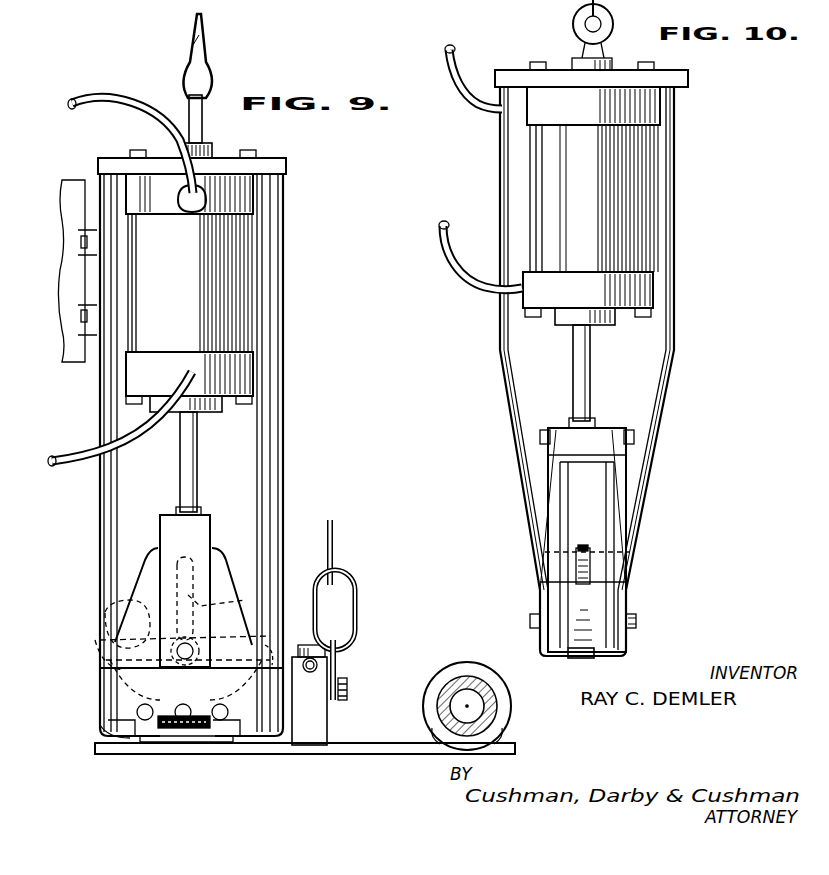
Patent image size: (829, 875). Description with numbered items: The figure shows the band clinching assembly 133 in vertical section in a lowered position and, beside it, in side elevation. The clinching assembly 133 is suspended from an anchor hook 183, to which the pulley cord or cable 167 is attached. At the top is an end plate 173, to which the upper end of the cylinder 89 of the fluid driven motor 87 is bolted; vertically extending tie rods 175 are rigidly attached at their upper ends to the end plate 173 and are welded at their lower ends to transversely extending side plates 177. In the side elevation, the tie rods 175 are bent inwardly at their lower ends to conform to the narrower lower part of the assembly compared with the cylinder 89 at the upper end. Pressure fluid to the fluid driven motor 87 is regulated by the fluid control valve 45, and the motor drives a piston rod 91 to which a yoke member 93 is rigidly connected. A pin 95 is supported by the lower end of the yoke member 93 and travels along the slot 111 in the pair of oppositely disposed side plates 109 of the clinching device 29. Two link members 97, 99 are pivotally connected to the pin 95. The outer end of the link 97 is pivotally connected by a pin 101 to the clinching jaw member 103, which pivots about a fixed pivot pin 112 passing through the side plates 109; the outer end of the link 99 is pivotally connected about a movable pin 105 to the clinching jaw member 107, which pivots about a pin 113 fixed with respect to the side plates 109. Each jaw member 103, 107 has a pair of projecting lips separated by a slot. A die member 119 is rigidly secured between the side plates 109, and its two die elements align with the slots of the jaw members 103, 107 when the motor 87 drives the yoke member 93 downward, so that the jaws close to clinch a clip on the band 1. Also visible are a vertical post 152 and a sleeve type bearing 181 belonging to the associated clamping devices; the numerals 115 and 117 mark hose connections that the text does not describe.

In FIG. 9, the band member 1 is at (183, 743).
In FIG. 9, the clip sealing or clinching device 29 is at (92, 630).
In FIG. 9, the fluid control valve 45 is at (62, 260).
In FIG. 9, the fluid driven motor 87 is at (291, 323).
In FIG. 10, the cylinder 89 is at (625, 215).
In FIG. 9, the piston rod 91 is at (200, 470).
In FIG. 10, the piston rod 91 is at (592, 392).
In FIG. 9, the yoke member 93 is at (212, 528).
In FIG. 10, the yoke member 93 is at (606, 430).
In FIG. 9, the pin 95 is at (200, 652).
In FIG. 9, the link member 97 is at (240, 632).
In FIG. 9, the link member 99 is at (105, 612).
In FIG. 9, the pin 101 is at (215, 658).
In FIG. 9, the clinching jaw member 103 is at (323, 632).
In FIG. 10, the clinching jaw member 103 is at (582, 658).
In FIG. 9, the movable pin 105 is at (100, 656).
In FIG. 9, the clinching jaw member 107 is at (100, 722).
In FIG. 9, the side plates 109 is at (230, 585).
In FIG. 10, the side plates 109 is at (560, 497).
In FIG. 9, the slot 111 is at (248, 600).
In FIG. 9, the fixed pivot pin 112 is at (224, 727).
In FIG. 10, the fixed pivot pin 112 is at (636, 620).
In FIG. 9, the pin 113 is at (150, 720).
In FIG. 9, the hydraulic hose 115 is at (128, 108).
In FIG. 10, the hydraulic hose 115 is at (472, 102).
In FIG. 9, the hydraulic hose 117 is at (132, 442).
In FIG. 10, the hydraulic hose 117 is at (476, 296).
In FIG. 9, the die member 119 is at (186, 701).
In FIG. 10, the die member 119 is at (590, 545).
In FIG. 9, the clinching assembly 133 is at (290, 473).
In FIG. 10, the clinching assembly 133 is at (683, 257).
In FIG. 9, the vertical post 152 is at (330, 720).
In FIG. 9, the pulley cord or cable 167 is at (204, 45).
In FIG. 9, the end plate 173 is at (284, 164).
In FIG. 10, the end plate 173 is at (688, 80).
In FIG. 9, the tie rods 175 is at (283, 250).
In FIG. 10, the tie rods 175 is at (675, 168).
In FIG. 9, the side plates 177 is at (118, 740).
In FIG. 9, the sleeve type bearing 181 is at (452, 690).
In FIG. 9, the anchor hook 183 is at (203, 130).
In FIG. 10, the anchor hook 183 is at (573, 28).